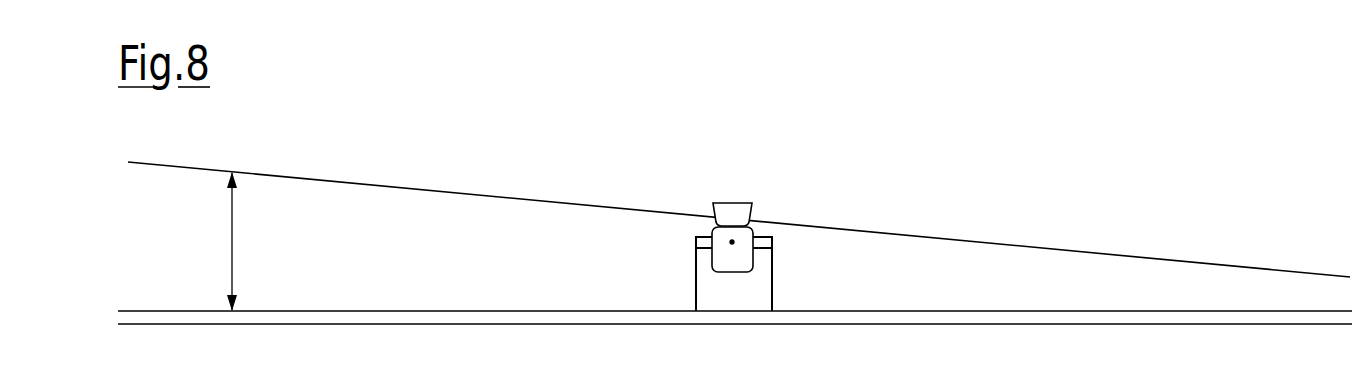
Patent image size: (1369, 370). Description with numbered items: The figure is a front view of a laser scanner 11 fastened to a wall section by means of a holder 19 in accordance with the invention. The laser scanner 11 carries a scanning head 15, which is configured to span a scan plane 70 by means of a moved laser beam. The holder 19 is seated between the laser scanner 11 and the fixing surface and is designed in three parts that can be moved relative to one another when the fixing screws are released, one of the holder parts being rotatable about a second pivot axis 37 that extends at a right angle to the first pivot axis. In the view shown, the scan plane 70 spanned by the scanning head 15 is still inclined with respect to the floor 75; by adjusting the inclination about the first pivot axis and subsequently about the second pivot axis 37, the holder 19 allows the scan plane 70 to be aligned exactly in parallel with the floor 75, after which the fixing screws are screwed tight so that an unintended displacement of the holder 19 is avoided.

The laser scanner 11 is at (705, 200).
The scanning head 15 is at (737, 209).
The holder 19 is at (760, 235).
The second pivot axis 37 is at (738, 245).
The scan plane 70 is at (528, 199).
The floor 75 is at (403, 309).